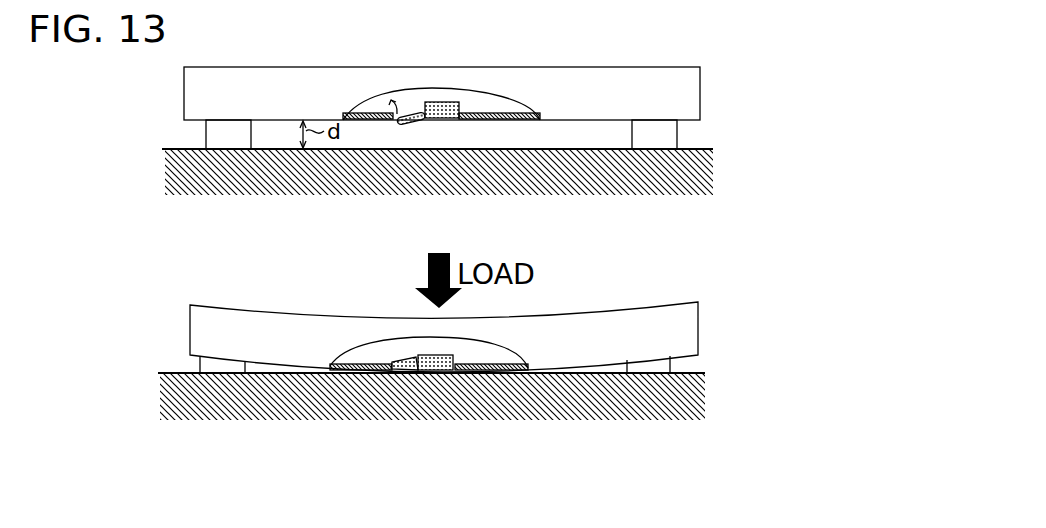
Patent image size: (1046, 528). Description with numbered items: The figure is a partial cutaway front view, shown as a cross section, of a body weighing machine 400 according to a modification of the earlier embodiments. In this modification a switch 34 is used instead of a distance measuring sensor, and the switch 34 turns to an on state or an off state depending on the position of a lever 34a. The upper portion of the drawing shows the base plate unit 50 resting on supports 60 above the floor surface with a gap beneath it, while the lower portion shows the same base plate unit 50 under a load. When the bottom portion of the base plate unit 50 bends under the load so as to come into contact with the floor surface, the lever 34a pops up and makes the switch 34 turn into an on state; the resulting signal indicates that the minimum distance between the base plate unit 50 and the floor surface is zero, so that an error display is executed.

The body weighing machine 400 is at (914, 32).
The base plate unit 50 is at (684, 67).
The support 60 is at (206, 134).
The switch 34 is at (442, 102).
The lever 34a is at (403, 112).